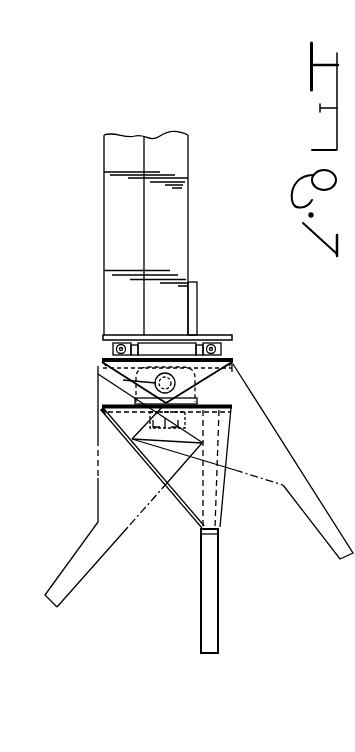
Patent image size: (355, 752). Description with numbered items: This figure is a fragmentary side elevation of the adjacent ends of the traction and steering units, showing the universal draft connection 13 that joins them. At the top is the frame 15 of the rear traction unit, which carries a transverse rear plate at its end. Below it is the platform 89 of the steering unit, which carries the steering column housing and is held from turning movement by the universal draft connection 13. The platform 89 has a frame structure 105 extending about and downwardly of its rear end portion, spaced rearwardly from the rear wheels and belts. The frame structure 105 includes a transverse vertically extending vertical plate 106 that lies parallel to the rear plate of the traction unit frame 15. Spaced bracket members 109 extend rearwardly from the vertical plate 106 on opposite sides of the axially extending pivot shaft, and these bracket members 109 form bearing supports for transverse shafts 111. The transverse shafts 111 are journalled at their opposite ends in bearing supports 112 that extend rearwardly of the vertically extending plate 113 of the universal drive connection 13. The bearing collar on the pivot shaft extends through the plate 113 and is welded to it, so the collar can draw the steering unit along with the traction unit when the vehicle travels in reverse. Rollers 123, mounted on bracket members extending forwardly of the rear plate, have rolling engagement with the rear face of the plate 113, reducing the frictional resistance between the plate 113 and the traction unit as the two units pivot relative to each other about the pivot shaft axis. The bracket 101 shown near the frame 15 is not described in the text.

The frame 15 is at (103, 228).
The bracket 101 is at (230, 335).
The rollers 123 is at (100, 348).
The vertically extending plate 113 is at (172, 348).
The universal draft connection 13 is at (90, 355).
The transverse shafts 111 is at (108, 377).
The vertical plate 106 is at (111, 401).
The bracket members 109 is at (226, 393).
The bearing supports 112 is at (226, 377).
The frame structure 105 is at (188, 488).
The platform 89 is at (218, 614).